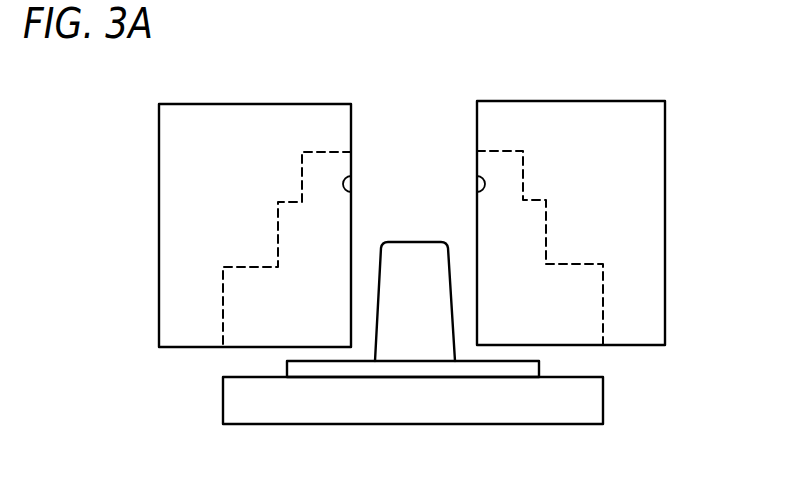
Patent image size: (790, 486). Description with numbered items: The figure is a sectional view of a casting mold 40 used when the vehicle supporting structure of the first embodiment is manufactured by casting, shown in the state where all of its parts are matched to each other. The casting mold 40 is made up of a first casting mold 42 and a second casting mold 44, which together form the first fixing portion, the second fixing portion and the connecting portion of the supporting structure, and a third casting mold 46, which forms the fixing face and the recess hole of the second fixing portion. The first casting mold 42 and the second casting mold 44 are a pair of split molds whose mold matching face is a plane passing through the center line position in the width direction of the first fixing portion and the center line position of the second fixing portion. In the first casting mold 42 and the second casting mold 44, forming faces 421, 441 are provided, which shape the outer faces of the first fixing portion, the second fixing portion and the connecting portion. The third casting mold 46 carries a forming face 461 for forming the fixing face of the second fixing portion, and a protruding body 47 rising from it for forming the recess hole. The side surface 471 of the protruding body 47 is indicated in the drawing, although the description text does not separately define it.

The clamping device 40 is at (576, 90).
The second clamp block 42 is at (643, 144).
The stepped recess of second clamp block 421 is at (547, 223).
The first clamp block 44 is at (252, 115).
The stepped recess of first clamp block 441 is at (285, 229).
The base 46 is at (590, 400).
The pedestal on base 461 is at (363, 361).
The workpiece holder 47 is at (398, 251).
The side surface of holder 471 is at (382, 269).